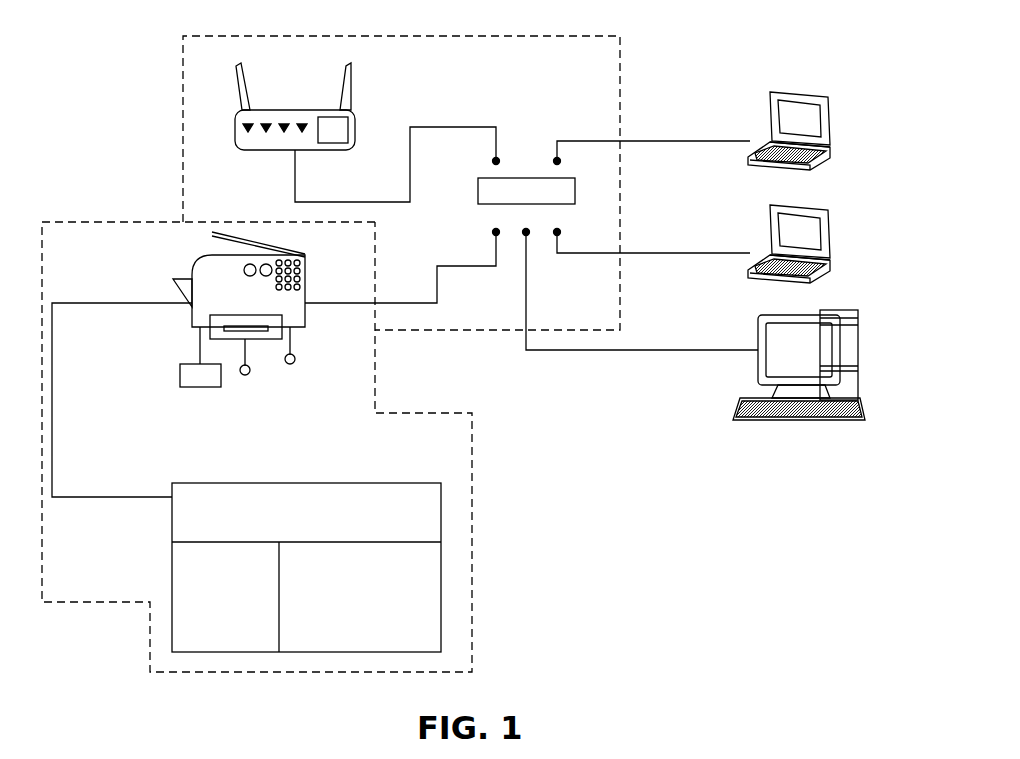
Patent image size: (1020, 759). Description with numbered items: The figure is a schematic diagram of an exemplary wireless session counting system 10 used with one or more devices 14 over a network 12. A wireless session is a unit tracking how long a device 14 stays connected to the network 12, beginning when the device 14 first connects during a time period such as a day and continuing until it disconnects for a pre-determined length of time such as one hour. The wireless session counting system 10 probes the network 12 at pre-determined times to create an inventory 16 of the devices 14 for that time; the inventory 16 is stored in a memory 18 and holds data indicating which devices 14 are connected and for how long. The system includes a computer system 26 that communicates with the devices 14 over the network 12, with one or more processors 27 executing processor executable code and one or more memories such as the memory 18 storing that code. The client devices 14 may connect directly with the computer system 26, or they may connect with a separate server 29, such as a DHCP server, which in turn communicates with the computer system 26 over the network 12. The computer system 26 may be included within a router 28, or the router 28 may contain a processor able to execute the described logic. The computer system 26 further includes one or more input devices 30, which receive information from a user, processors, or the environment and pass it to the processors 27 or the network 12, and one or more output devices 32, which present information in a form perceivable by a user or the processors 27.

The wireless session counting system 10 is at (458, 413).
The network 12 is at (580, 36).
The device 14 is at (810, 92).
The inventory 16 is at (385, 483).
The memory 18 is at (190, 387).
The computer system 26 is at (186, 270).
The processor 27 is at (308, 268).
The router 28 is at (343, 105).
The server 29 is at (492, 205).
The input device 30 is at (245, 375).
The output device 32 is at (290, 364).